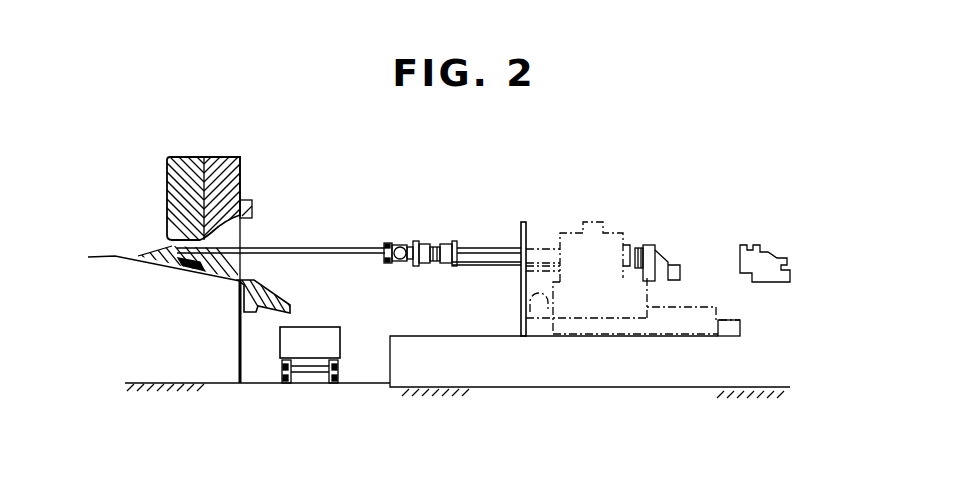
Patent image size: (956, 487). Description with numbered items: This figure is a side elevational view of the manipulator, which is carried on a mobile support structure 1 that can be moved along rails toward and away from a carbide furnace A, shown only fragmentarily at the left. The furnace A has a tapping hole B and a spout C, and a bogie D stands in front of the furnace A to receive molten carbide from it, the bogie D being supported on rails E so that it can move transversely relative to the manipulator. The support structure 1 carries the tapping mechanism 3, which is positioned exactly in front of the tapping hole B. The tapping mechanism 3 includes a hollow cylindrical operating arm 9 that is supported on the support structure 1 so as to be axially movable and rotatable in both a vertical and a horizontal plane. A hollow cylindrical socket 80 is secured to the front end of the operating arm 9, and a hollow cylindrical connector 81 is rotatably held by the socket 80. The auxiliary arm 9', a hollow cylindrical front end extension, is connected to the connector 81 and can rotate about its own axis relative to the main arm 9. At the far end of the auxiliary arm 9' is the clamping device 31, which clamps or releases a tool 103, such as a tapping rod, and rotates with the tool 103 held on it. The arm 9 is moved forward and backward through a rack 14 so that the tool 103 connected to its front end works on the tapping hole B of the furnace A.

The carbide furnace A is at (237, 172).
The tapping hole B is at (222, 229).
The spout C is at (270, 288).
The bogie D is at (330, 342).
The rails E is at (334, 385).
The tool 103 is at (320, 247).
The clamping device 31 is at (396, 243).
The auxiliary arm 9' is at (407, 223).
The connector 81 is at (432, 245).
The socket 80 is at (446, 245).
The operating arm 9 is at (489, 217).
The rack 14 is at (493, 247).
The tapping mechanism 3 is at (505, 240).
The support structure 1 is at (628, 330).